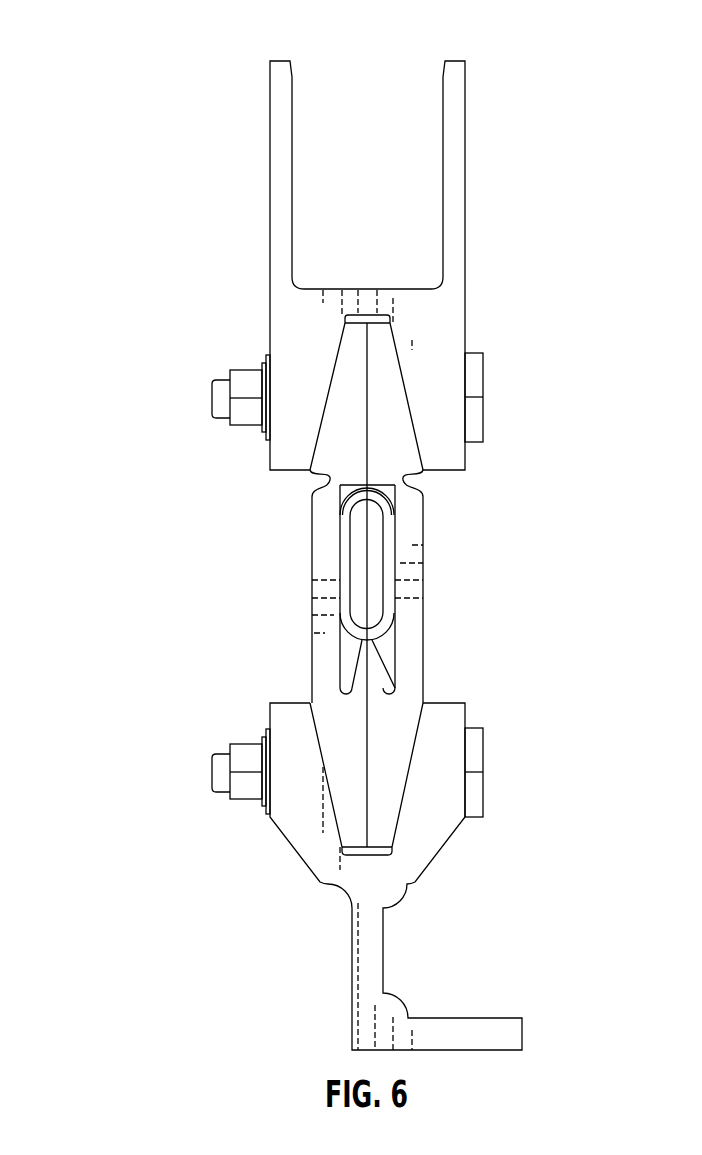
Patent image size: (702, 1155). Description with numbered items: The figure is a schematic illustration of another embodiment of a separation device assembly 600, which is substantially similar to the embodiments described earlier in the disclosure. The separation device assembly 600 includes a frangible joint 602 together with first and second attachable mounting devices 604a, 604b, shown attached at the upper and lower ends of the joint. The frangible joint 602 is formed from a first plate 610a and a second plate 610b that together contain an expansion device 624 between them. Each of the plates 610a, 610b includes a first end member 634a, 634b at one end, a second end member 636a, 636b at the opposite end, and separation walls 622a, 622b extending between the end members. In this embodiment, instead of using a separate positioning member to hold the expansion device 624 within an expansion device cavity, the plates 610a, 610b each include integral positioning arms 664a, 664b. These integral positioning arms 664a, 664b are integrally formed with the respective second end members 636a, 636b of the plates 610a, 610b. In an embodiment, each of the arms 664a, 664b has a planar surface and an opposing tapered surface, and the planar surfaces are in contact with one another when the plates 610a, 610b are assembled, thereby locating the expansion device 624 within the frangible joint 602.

The separation device assembly 600 is at (143, 70).
The frangible joint 602 is at (187, 650).
The first attachable mounting device 604a is at (223, 267).
The second attachable mounting device 604b is at (315, 962).
The first plate 610a is at (310, 602).
The second plate 610b is at (427, 575).
The separation wall 622a is at (325, 650).
The separation wall 622b is at (408, 608).
The expansion device 624 is at (345, 538).
The first end member 634a is at (345, 380).
The first end member 634b is at (390, 380).
The second end member 636a is at (347, 780).
The second end member 636b is at (387, 780).
The integral positioning arm 664a is at (355, 677).
The integral positioning arm 664b is at (380, 677).